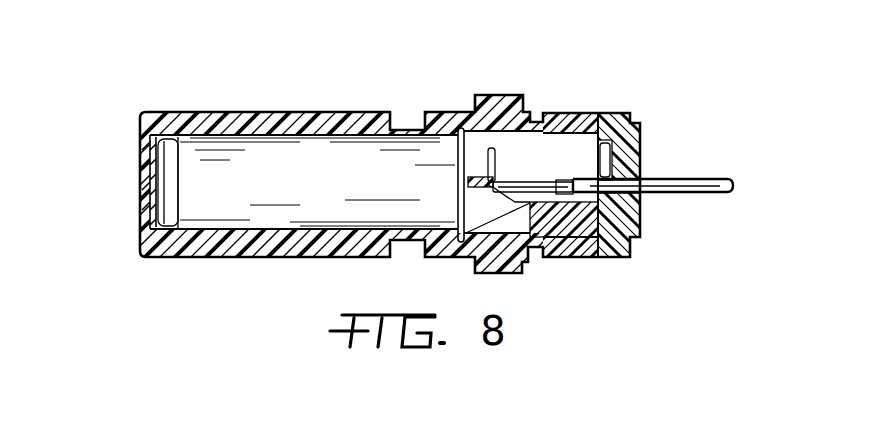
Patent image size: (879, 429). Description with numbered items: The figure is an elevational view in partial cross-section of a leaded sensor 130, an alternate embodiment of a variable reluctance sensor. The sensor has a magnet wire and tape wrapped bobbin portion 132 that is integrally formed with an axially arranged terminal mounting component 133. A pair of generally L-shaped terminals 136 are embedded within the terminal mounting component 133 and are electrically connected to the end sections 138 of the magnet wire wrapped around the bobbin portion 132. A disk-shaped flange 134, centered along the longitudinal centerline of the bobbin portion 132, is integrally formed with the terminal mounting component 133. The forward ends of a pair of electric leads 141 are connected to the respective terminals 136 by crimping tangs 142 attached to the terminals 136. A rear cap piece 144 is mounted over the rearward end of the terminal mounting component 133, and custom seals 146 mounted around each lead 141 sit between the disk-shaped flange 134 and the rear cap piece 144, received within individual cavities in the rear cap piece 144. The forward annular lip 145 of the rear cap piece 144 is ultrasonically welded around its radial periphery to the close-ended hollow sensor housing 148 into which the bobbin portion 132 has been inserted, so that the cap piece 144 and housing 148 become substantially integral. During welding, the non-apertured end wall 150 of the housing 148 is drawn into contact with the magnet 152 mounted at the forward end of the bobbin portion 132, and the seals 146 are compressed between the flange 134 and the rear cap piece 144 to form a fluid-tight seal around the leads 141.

The leaded sensor 130 is at (201, 85).
The bobbin portion 132 is at (311, 192).
The terminal mounting component 133 is at (565, 218).
The disk-shaped flange 134 is at (596, 135).
The L-shaped terminals 136 is at (521, 180).
The end sections of the magnet wire 138 is at (506, 148).
The electric leads 141 is at (697, 188).
The crimping tangs 142 is at (568, 183).
The rear cap piece 144 is at (637, 228).
The forward annular lip 145 is at (548, 125).
The custom seals 146 is at (614, 172).
The sensor housing 148 is at (328, 112).
The non-apertured end wall 150 is at (140, 143).
The magnet 152 is at (141, 197).